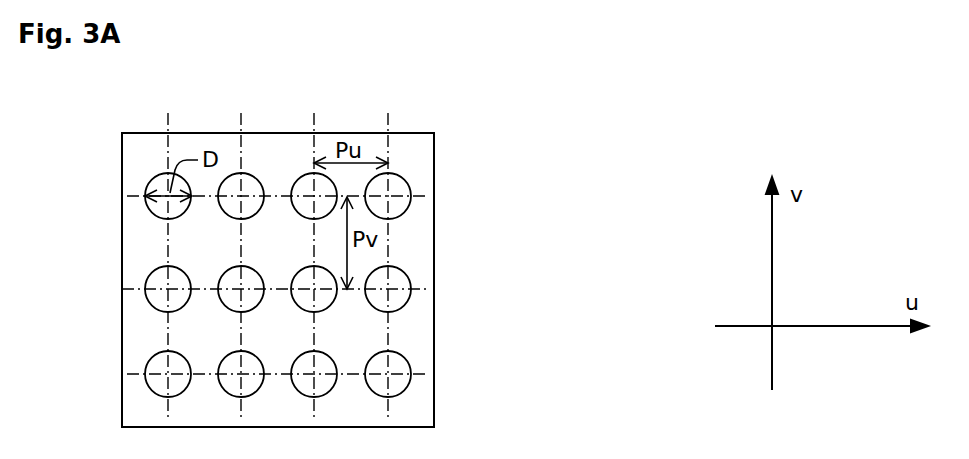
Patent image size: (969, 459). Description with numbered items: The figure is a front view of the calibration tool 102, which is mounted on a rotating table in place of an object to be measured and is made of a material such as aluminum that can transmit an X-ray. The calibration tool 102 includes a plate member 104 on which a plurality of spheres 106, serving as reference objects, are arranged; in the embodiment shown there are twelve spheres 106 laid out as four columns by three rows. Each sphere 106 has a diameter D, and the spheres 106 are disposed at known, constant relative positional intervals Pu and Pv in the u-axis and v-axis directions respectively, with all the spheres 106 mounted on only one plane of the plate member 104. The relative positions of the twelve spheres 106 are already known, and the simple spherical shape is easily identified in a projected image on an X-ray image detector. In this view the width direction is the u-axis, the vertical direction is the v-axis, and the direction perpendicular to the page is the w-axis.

The calibration tool 102 is at (462, 143).
The plate member 104 is at (222, 421).
The sphere 106 is at (150, 299).